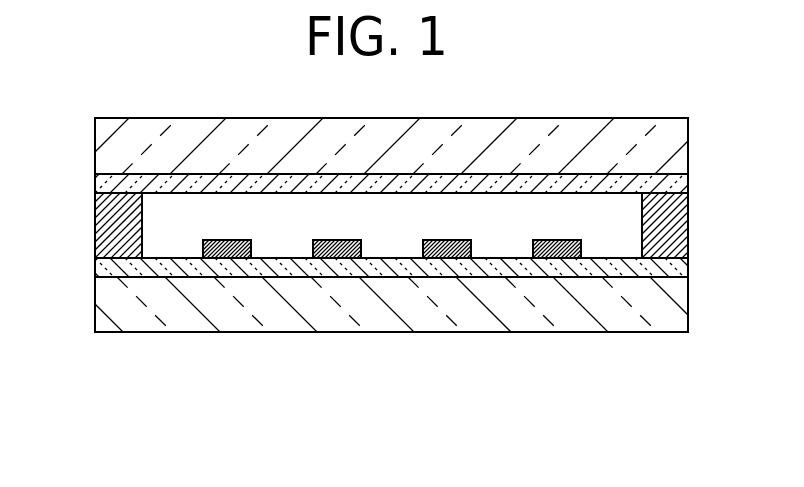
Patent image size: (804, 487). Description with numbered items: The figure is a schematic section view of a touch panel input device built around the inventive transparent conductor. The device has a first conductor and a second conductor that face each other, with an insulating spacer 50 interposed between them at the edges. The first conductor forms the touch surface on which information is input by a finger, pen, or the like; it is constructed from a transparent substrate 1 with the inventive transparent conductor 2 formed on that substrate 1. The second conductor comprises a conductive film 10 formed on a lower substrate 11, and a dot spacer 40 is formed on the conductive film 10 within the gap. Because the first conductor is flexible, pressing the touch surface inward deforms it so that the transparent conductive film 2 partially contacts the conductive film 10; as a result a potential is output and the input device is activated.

The transparent substrate 1 is at (672, 142).
The transparent conductor 2 is at (673, 182).
The conductive film 10 is at (687, 268).
The substrate 11 is at (672, 310).
The dot spacer 40 is at (223, 258).
The insulating spacer 50 is at (95, 222).